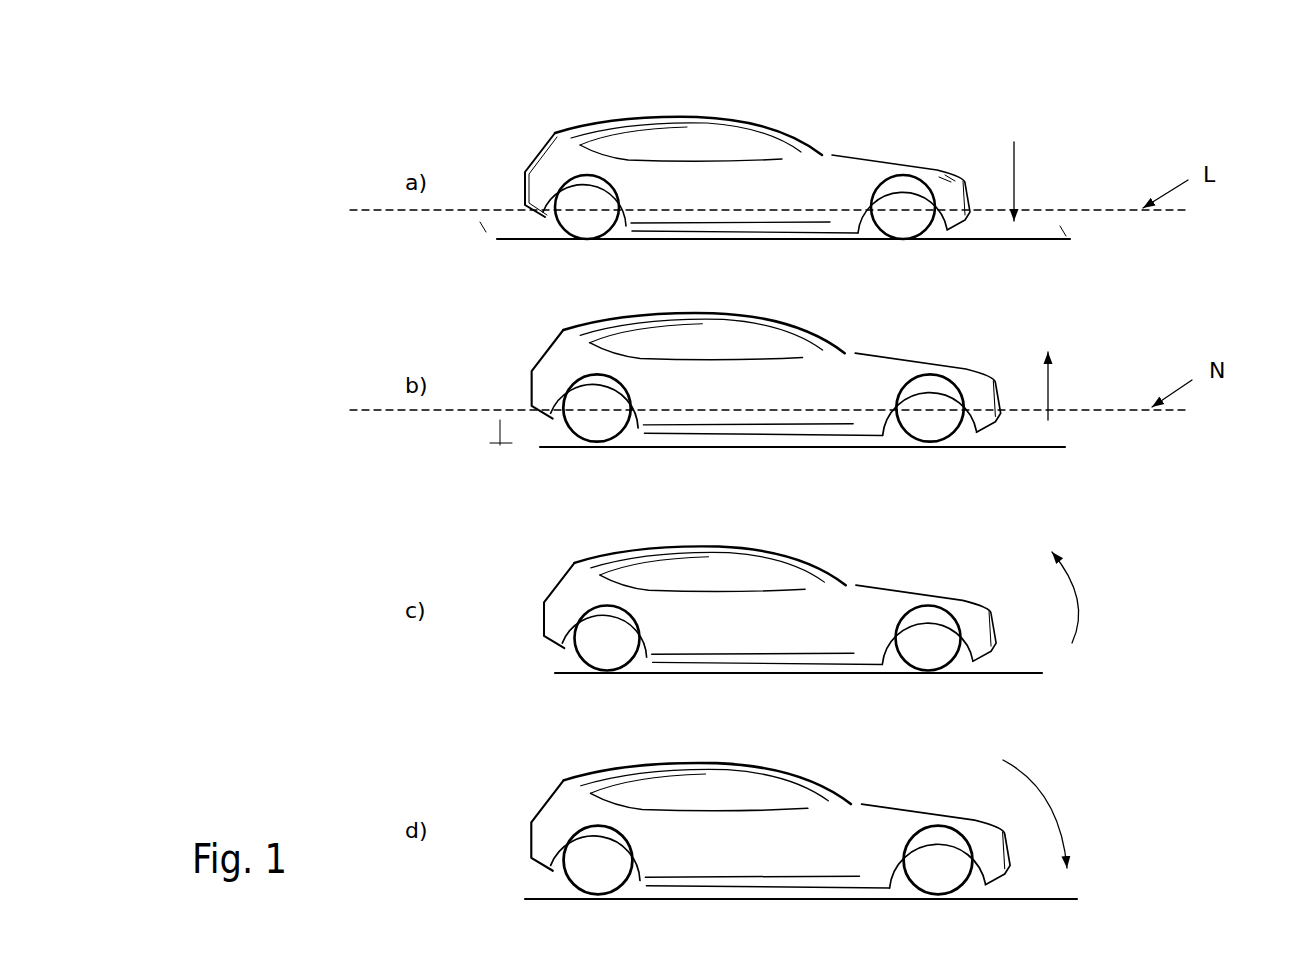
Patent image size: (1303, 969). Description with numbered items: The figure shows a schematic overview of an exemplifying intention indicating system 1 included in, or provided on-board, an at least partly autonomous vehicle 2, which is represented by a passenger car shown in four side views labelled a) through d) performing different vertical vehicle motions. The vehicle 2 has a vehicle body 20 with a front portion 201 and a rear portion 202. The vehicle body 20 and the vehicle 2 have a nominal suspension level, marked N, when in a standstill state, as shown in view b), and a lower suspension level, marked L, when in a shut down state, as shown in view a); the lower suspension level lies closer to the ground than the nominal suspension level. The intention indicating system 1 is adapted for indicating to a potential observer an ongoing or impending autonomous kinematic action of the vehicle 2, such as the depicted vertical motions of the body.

The intention indicating system 1 is at (543, 80).
The vehicle 2 is at (725, 100).
The vehicle body 20 is at (820, 183).
The front portion 201 is at (942, 147).
The rear portion 202 is at (502, 162).